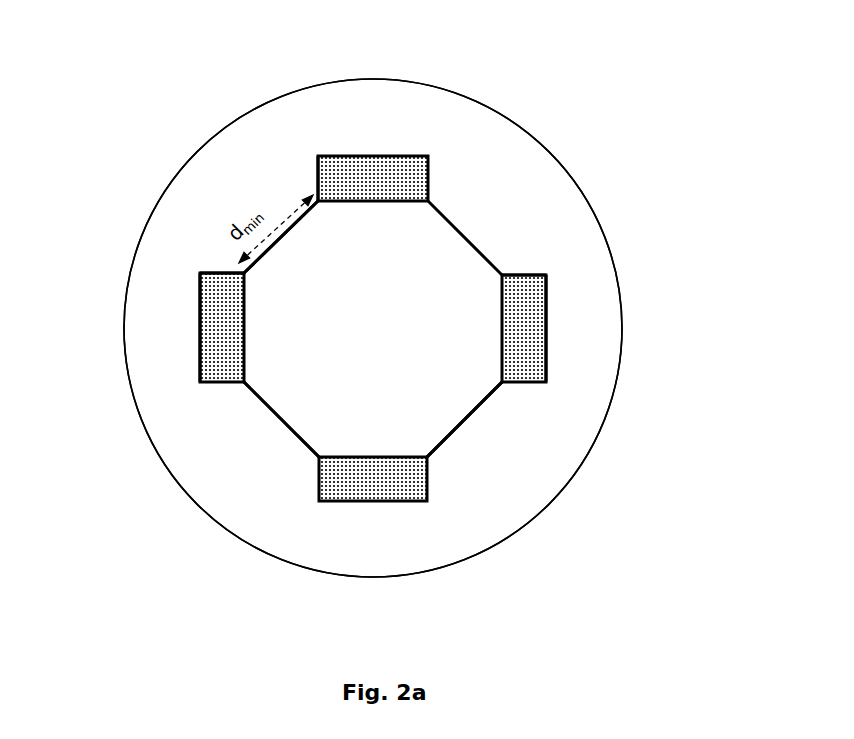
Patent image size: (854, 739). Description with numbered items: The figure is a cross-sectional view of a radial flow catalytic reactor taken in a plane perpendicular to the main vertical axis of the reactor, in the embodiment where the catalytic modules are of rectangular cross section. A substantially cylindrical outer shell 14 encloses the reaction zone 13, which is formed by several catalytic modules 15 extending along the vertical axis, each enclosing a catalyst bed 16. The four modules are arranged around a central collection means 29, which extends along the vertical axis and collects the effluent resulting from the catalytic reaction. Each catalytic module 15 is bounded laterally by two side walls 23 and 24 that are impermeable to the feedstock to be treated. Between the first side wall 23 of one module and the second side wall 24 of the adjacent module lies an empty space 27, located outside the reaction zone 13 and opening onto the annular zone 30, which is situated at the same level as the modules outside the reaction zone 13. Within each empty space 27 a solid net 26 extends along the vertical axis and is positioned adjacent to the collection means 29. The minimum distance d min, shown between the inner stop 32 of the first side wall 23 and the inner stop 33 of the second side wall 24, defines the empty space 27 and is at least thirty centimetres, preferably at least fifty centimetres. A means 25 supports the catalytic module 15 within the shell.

The reaction zone 13 is at (405, 181).
The outer shell 14 is at (148, 446).
The catalytic module 15 is at (553, 290).
The catalyst bed 16 is at (532, 322).
The first side wall 23 is at (327, 171).
The second side wall 24 is at (206, 312).
The supporting means 25 is at (434, 90).
The solid net 26 is at (478, 422).
The empty space 27 is at (508, 408).
The collection means 29 is at (297, 322).
The annular zone 30 is at (256, 477).
The inner stop of the first side wall 32 is at (307, 193).
The inner stop of the second side wall 33 is at (232, 259).